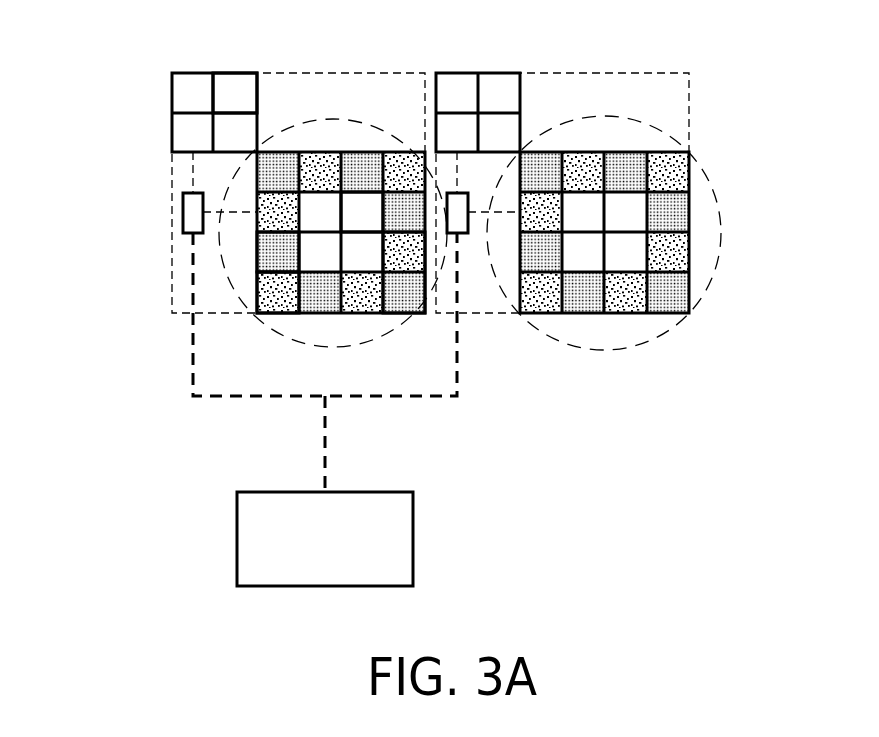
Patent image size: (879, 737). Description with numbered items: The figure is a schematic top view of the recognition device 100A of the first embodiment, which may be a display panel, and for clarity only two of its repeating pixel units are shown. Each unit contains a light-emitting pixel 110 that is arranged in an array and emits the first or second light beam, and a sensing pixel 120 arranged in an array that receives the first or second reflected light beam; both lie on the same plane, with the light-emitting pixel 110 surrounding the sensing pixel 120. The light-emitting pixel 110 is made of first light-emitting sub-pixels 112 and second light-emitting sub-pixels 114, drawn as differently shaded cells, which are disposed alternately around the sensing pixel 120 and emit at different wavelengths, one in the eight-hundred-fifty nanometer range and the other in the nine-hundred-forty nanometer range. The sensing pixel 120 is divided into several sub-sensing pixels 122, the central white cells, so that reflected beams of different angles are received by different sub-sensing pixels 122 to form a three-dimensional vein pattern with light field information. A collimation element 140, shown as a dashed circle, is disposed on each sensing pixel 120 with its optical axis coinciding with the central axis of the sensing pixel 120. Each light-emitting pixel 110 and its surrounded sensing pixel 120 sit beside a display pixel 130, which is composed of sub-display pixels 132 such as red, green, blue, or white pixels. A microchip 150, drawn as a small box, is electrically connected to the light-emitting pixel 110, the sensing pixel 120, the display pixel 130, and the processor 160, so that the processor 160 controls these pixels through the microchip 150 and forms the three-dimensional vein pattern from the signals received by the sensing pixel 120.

The recognition device 100A is at (749, 589).
The light-emitting pixel 110 is at (255, 316).
The first light-emitting sub-pixel 112 is at (262, 300).
The second light-emitting sub-pixel 114 is at (264, 253).
The sensing pixel 120 is at (387, 277).
The sub-sensing pixel 122 is at (360, 207).
The display pixel 130 is at (190, 71).
The sub-display pixel 132 is at (233, 80).
The collimation element 140 is at (296, 120).
The microchip 150 is at (190, 213).
The processor 160 is at (370, 492).